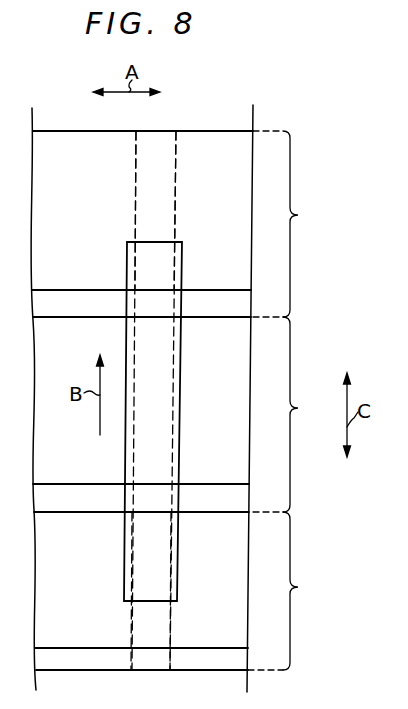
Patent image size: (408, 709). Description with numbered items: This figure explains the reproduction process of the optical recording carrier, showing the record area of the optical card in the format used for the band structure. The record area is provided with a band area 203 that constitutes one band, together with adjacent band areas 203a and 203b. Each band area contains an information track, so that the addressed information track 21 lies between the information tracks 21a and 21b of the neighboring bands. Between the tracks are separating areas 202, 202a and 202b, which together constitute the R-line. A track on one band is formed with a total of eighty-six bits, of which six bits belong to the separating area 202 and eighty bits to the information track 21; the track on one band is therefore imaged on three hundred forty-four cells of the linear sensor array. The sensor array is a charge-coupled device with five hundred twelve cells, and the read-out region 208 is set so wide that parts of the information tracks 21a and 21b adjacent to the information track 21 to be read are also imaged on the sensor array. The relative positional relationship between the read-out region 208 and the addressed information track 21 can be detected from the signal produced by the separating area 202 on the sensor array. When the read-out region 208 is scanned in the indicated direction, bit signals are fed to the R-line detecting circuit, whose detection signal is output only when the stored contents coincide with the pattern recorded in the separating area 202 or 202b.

The information track 21 is at (160, 413).
The information track 21a is at (158, 628).
The information track 21b is at (163, 179).
The separating area 202 is at (153, 497).
The separating area 202a is at (153, 661).
The separating area 202b is at (148, 306).
The band area 203 is at (295, 414).
The band area 203a is at (299, 591).
The band area 203b is at (303, 224).
The read-out region 208 is at (152, 241).